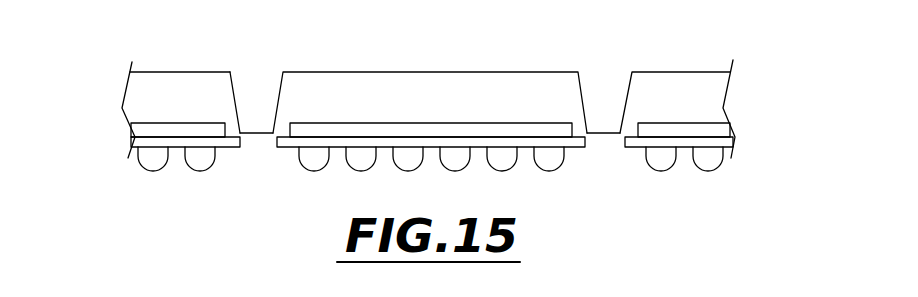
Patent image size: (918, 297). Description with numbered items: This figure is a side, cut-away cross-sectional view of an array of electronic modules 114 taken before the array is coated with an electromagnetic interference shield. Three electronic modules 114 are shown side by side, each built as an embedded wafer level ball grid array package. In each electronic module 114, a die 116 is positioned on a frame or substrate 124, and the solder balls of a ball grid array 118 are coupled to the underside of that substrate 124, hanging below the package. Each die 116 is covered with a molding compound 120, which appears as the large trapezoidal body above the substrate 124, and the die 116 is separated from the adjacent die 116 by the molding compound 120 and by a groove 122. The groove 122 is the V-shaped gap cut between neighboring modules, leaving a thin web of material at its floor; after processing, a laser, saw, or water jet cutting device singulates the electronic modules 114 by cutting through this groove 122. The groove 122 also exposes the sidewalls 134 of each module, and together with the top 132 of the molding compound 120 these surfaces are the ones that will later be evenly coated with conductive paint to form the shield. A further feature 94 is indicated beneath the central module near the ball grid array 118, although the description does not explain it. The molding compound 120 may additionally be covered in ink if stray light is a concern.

The solder ball array / package bottom 94 is at (582, 161).
The electronic module 114 is at (508, 55).
The die 116 is at (725, 131).
The ball grid array 118 is at (362, 162).
The molding compound 120 is at (147, 97).
The groove 122 is at (280, 57).
The frame or substrate 124 is at (133, 144).
The top 132 is at (178, 64).
The sidewalls 134 is at (243, 86).